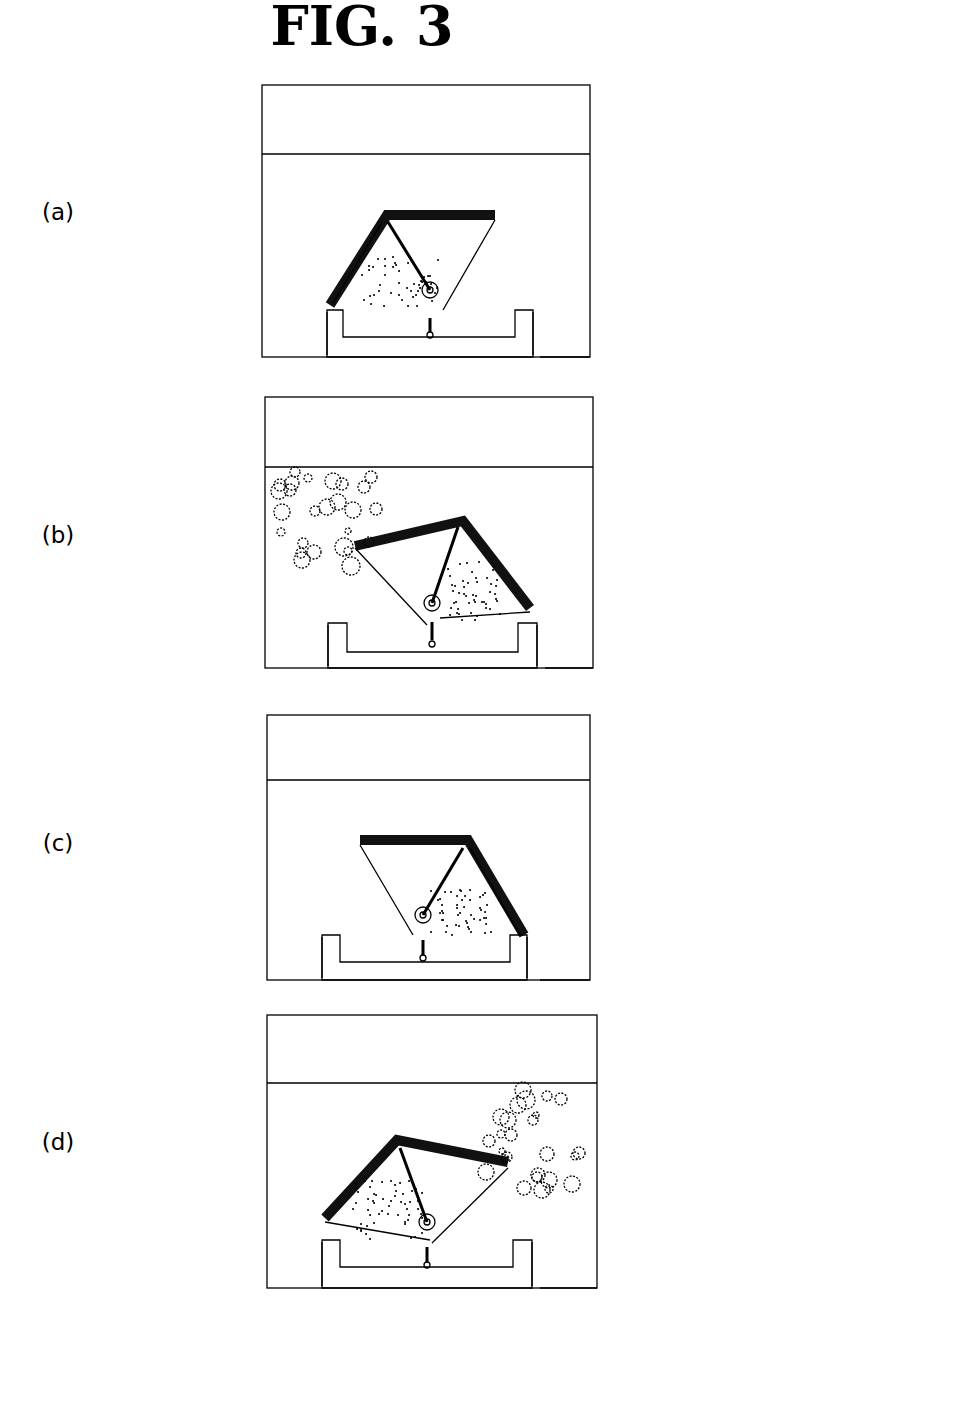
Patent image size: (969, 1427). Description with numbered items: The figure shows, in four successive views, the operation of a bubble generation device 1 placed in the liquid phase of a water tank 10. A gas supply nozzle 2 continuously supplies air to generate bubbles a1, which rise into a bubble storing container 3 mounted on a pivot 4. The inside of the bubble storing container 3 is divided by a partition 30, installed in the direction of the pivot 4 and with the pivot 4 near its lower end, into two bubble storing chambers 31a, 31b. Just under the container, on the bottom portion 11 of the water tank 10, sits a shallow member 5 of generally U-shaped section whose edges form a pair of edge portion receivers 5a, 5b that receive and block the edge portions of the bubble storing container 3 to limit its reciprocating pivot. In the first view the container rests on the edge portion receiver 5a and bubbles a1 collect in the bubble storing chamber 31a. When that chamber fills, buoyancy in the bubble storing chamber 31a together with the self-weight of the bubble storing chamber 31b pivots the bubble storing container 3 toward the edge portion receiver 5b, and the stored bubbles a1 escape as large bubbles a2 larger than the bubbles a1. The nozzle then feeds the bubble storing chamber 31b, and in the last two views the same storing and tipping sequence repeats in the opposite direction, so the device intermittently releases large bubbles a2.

The bubble generation device 1 is at (567, 229).
The gas supply nozzle 2 is at (435, 325).
The bubble storing container 3 is at (347, 232).
The pivot 4 is at (440, 290).
The shallow member 5 is at (453, 345).
The edge portion receiver 5a is at (327, 323).
The edge portion receiver 5b is at (533, 320).
The water tank 10 is at (590, 120).
The bottom portion 11 is at (565, 357).
The partition 30 is at (415, 252).
The bubble storing chamber 31a is at (352, 295).
The bubble storing chamber 31b is at (437, 243).
The bubbles a1 is at (381, 293).
The large bubbles a2 is at (300, 540).